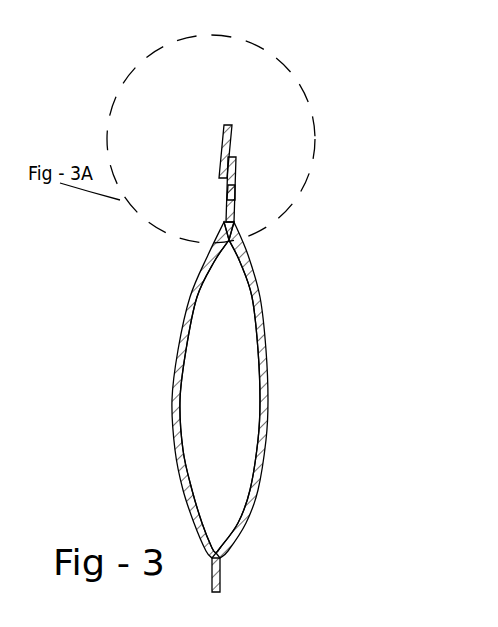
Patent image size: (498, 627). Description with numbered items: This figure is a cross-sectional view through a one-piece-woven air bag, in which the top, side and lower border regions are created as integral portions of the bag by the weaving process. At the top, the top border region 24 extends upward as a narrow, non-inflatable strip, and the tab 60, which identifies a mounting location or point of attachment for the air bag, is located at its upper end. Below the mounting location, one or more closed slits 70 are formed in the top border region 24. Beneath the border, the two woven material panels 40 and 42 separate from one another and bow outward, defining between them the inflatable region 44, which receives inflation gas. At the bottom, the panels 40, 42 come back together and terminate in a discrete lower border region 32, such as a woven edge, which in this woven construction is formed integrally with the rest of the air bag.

The top border region 24 is at (234, 204).
The lower border region 32 is at (222, 572).
The woven material panel 40 is at (191, 297).
The woven material panel 42 is at (267, 353).
The inflatable region 44 is at (233, 401).
The tab 60 is at (221, 157).
The closed slit 70 is at (226, 197).